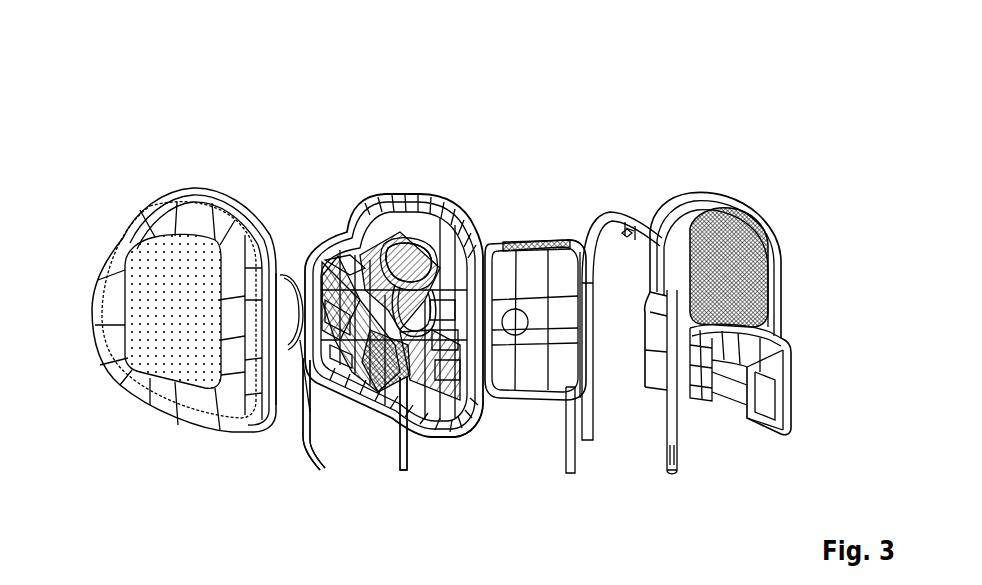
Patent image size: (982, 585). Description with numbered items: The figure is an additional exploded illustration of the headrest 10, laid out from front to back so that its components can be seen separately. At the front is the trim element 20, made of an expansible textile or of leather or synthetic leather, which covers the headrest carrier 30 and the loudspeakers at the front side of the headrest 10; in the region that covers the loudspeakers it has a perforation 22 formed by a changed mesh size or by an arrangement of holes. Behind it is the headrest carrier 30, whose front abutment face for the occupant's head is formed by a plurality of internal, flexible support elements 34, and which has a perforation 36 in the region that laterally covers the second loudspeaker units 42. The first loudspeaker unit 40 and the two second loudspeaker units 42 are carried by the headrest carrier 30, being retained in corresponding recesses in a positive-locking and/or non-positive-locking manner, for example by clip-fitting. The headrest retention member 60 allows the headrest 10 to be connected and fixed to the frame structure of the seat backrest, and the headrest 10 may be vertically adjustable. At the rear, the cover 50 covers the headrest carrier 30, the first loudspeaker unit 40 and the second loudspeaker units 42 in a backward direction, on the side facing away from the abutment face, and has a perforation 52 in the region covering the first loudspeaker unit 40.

The headrest 10 is at (336, 80).
The trim element 20 is at (205, 214).
The perforation 22 is at (160, 300).
The headrest carrier 30 is at (425, 200).
The flexible support elements 34 is at (395, 297).
The perforation 36 is at (480, 430).
The first loudspeaker unit 40 is at (505, 251).
The second loudspeaker units 42 is at (398, 463).
The cover 50 is at (773, 227).
The perforation 52 is at (727, 227).
The headrest retention member 60 is at (618, 224).